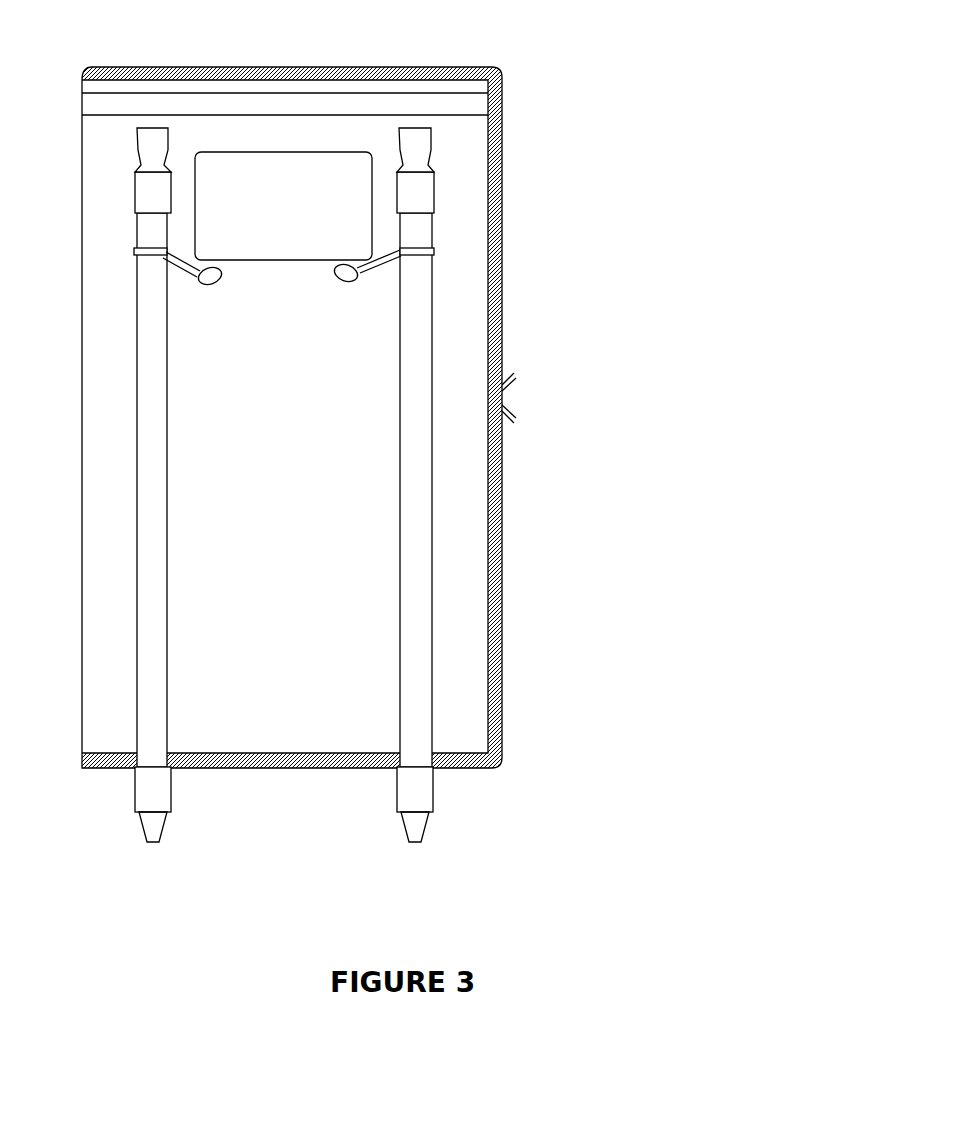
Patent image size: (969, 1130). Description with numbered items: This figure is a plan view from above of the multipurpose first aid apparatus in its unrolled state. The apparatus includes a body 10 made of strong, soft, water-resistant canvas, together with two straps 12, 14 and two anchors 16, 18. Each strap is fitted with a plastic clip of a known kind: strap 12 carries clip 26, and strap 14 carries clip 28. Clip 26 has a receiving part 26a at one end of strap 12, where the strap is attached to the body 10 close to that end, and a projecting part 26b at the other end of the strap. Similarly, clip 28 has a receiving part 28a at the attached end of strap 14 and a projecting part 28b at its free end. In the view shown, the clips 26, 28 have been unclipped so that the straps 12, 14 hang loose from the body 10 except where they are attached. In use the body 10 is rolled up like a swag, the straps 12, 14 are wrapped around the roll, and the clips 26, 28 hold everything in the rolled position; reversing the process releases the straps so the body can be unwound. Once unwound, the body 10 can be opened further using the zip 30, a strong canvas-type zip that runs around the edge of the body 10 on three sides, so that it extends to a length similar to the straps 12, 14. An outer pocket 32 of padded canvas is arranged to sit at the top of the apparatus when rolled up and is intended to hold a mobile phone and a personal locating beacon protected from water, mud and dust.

The body 10 is at (458, 295).
The strap 12 is at (155, 675).
The strap 14 is at (402, 683).
The anchor 16 is at (197, 280).
The anchor 18 is at (365, 262).
The clip 26 is at (146, 190).
The receiving part 26a is at (146, 145).
The projecting part 26b is at (155, 818).
The clip 28 is at (423, 193).
The receiving part 28a is at (413, 160).
The projecting part 28b is at (417, 828).
The zip 30 is at (502, 333).
The outer pocket 32 is at (287, 177).